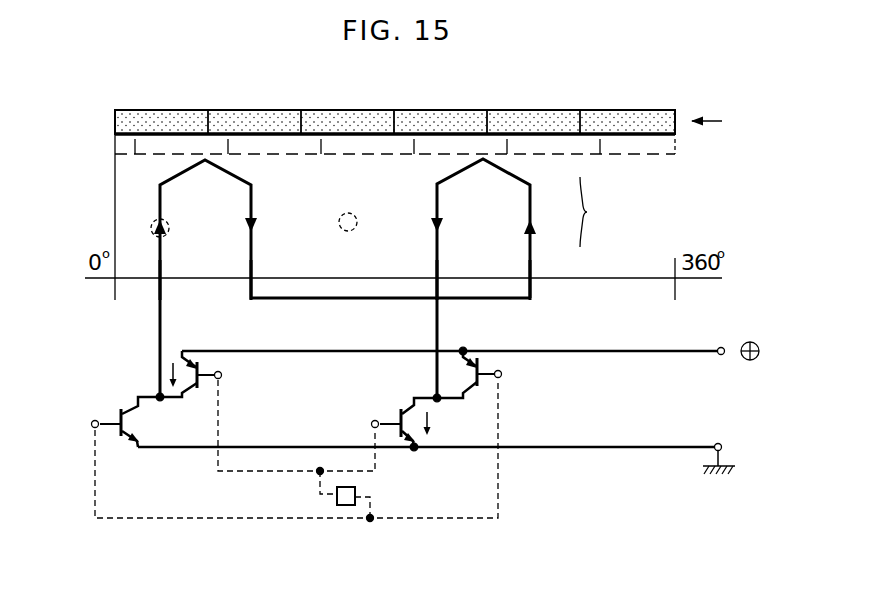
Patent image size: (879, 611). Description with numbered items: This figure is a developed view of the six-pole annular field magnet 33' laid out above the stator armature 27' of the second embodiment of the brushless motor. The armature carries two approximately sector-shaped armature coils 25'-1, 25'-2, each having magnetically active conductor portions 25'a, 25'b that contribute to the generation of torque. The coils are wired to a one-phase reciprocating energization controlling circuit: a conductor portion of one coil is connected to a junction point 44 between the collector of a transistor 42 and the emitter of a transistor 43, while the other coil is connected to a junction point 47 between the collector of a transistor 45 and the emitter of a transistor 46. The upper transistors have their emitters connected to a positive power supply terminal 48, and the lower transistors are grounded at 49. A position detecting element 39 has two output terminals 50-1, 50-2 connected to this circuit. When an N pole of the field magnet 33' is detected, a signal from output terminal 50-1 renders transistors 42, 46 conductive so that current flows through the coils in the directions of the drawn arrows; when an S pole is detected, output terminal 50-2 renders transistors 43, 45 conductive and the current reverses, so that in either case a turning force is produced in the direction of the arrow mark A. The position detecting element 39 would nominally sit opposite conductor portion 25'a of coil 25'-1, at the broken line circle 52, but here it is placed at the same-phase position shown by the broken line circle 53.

The armature coil 25'-1 is at (342, 278).
The armature coil 25'-2 is at (444, 278).
The magnetically active conductor portion 25'a is at (330, 267).
The magnetically active conductor portion 25'b is at (425, 267).
The stator armature 27' is at (604, 212).
The field magnet 33' is at (423, 116).
The position detecting element 39 is at (346, 507).
The transistor 42 is at (223, 371).
The transistor 43 is at (128, 441).
The junction point 44 is at (157, 395).
The transistor 45 is at (482, 357).
The transistor 46 is at (419, 452).
The junction point 47 is at (434, 397).
The positive power supply terminal 48 is at (723, 346).
The ground 49 is at (720, 443).
The output terminal 50-1 is at (317, 488).
The output terminal 50-2 is at (357, 500).
The broken line circle 52 is at (167, 222).
The broken line circle 53 is at (356, 216).
The arrow mark A is at (717, 122).